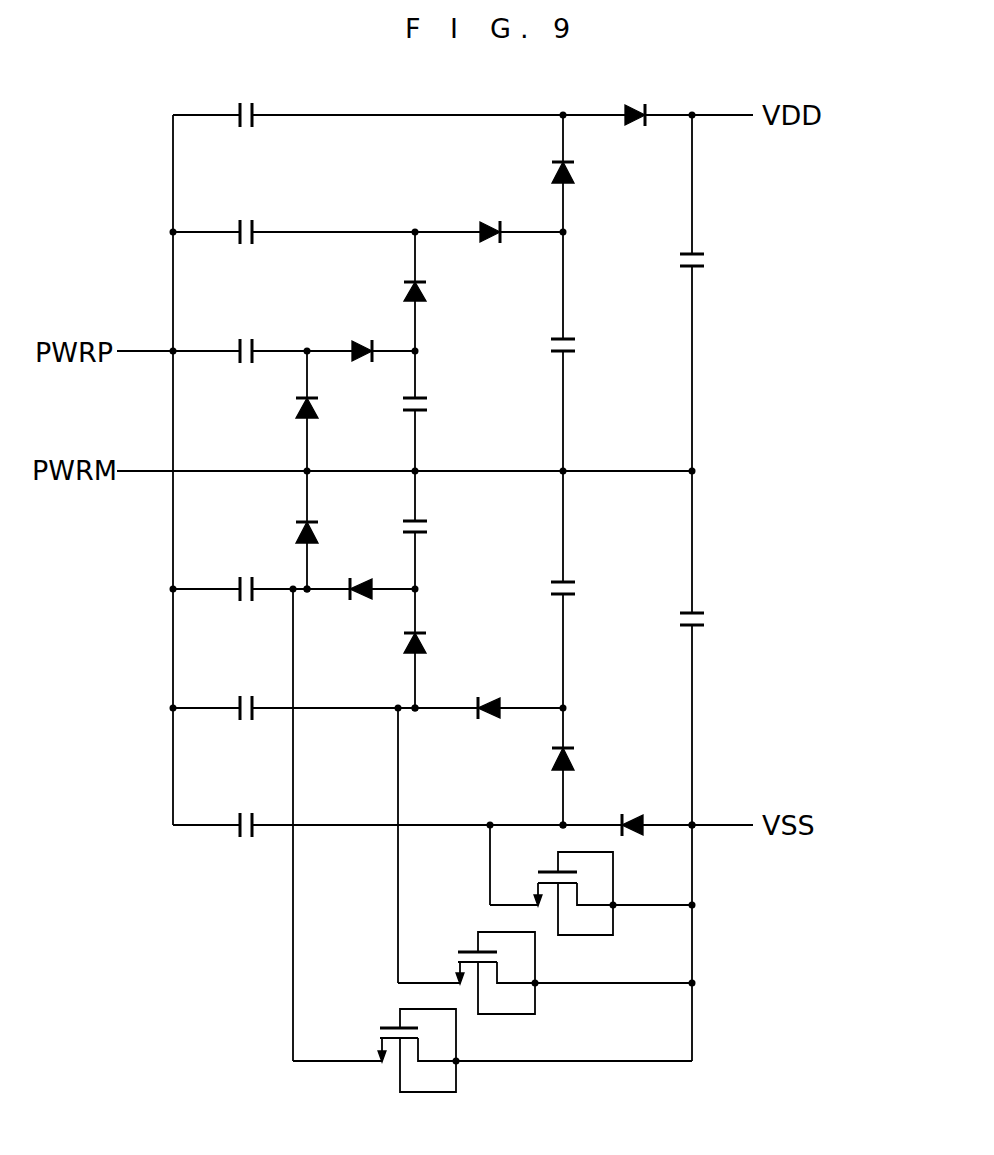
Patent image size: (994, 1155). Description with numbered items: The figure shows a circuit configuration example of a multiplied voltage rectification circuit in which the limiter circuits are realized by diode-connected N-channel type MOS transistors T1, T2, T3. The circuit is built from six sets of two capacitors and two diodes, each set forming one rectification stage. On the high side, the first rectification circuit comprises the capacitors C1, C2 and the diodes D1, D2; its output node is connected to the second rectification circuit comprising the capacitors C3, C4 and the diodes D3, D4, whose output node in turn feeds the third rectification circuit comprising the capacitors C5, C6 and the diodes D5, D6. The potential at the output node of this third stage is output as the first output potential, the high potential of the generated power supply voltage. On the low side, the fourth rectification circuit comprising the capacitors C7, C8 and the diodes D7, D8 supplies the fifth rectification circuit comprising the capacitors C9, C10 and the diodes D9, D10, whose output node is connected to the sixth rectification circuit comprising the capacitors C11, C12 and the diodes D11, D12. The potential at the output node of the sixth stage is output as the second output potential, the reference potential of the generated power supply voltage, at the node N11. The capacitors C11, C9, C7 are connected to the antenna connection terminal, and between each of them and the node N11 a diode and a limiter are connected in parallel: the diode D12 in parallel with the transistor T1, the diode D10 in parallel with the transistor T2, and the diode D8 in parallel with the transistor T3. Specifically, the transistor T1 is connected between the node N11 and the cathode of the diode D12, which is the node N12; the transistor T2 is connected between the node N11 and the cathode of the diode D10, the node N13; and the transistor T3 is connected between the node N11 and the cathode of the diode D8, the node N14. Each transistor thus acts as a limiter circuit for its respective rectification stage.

The capacitor C1 is at (251, 365).
The capacitor C2 is at (438, 407).
The capacitor C3 is at (246, 246).
The capacitor C4 is at (587, 343).
The capacitor C5 is at (246, 129).
The capacitor C6 is at (715, 262).
The capacitor C7 is at (248, 572).
The capacitor C8 is at (439, 527).
The capacitor C9 is at (248, 692).
The capacitor C10 is at (592, 587).
The capacitor C11 is at (254, 807).
The capacitor C12 is at (720, 620).
The diode D1 is at (290, 408).
The diode D2 is at (366, 368).
The diode D3 is at (441, 288).
The diode D4 is at (496, 249).
The diode D5 is at (586, 175).
The diode D6 is at (641, 132).
The diode D7 is at (284, 532).
The diode D8 is at (364, 571).
The diode D9 is at (440, 647).
The diode D10 is at (495, 693).
The diode D11 is at (596, 764).
The diode D12 is at (639, 809).
The diode-connected N-channel type MOS transistor T1 is at (591, 888).
The diode-connected N-channel type MOS transistor T2 is at (545, 966).
The diode-connected N-channel type MOS transistor T3 is at (492, 1043).
The node N11 is at (708, 815).
The node N12 is at (547, 813).
The node N13 is at (428, 718).
The node N14 is at (320, 606).